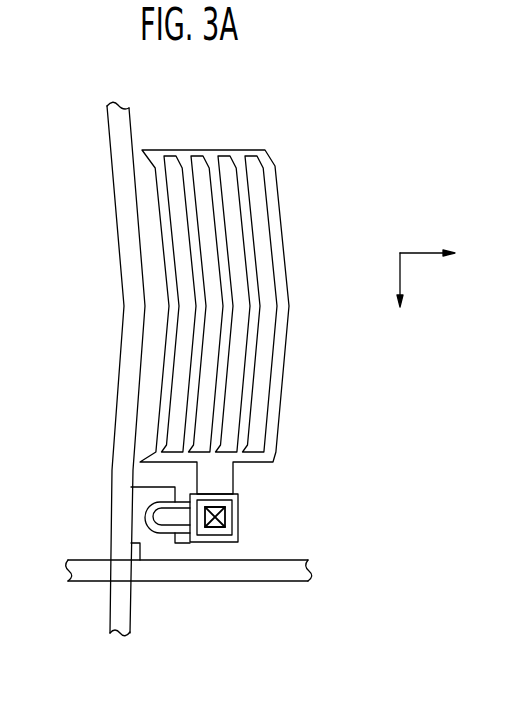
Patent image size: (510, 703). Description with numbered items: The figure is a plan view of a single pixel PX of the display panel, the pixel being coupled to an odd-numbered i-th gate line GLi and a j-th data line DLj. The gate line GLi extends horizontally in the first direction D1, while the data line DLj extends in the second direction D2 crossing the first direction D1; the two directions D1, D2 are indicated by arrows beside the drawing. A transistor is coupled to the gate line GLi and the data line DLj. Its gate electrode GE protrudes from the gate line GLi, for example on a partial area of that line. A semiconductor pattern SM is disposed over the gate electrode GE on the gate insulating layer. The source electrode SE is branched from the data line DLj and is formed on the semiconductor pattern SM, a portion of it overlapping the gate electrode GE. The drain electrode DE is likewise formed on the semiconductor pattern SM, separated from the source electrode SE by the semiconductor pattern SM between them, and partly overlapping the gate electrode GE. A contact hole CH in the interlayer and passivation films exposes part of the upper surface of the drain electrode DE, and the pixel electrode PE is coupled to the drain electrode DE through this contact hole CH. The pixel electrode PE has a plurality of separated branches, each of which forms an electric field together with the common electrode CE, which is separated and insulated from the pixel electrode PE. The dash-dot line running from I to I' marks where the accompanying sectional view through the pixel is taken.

The pixel PX is at (178, 272).
The common electrode CE is at (178, 322).
The pixel electrode PE is at (167, 355).
The j-th data line DLj is at (122, 635).
The i-th gate line GLi is at (68, 571).
The semiconductor pattern SM is at (150, 535).
The gate electrode GE is at (172, 540).
The source electrode SE is at (163, 543).
The drain electrode DE is at (183, 534).
The contact hole CH is at (213, 540).
The section line I is at (151, 520).
The section line I' is at (177, 457).
The first direction D1 is at (438, 255).
The second direction D2 is at (399, 295).